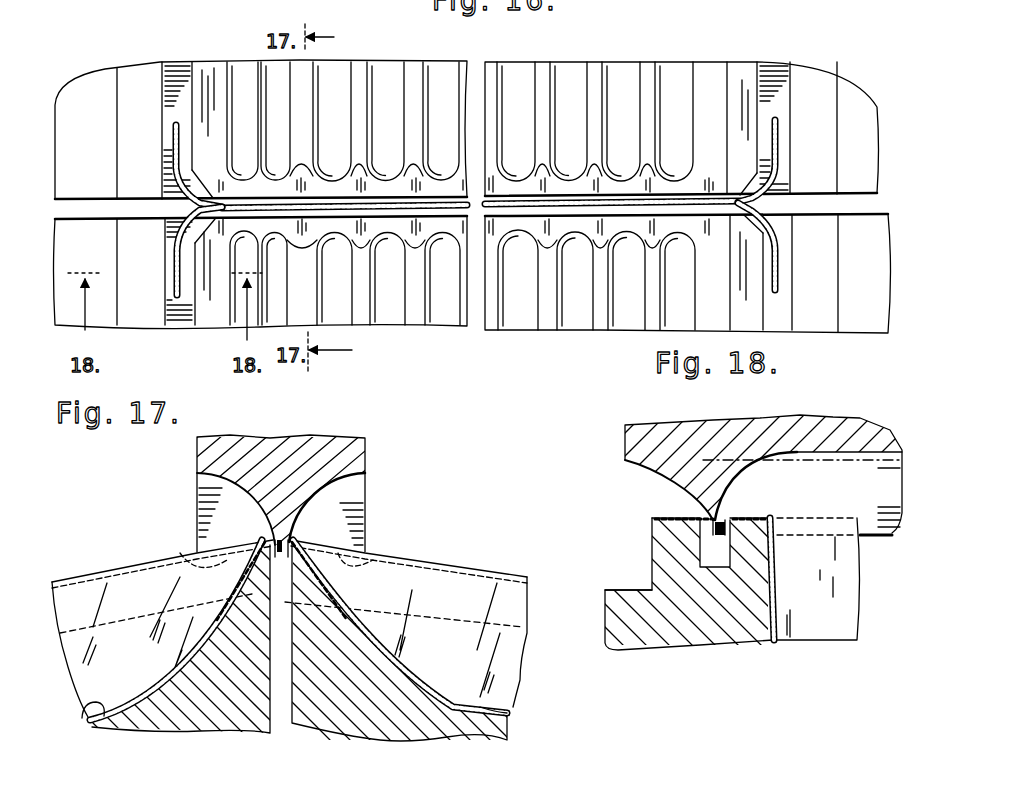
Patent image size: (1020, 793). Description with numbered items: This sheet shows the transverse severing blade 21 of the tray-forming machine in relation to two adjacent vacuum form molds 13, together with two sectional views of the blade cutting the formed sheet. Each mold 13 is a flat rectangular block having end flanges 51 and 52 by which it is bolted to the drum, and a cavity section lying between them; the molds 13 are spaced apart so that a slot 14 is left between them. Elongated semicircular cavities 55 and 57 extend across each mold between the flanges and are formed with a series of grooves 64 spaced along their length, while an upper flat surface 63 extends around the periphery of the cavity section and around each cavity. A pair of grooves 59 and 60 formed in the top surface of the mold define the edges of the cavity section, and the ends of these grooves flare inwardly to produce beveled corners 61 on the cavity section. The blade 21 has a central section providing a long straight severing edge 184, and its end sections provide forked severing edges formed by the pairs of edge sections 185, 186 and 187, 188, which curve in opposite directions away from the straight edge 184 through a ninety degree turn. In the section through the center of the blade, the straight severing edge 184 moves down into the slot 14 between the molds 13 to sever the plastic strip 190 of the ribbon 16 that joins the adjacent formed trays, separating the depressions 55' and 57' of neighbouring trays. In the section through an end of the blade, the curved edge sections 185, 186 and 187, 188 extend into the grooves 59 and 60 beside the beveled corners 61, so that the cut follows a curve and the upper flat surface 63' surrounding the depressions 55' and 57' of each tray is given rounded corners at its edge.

In FIG. 16, the vacuum form mold 13 is at (106, 64).
In FIG. 17, the vacuum form mold 13 is at (181, 743).
In FIG. 18, the vacuum form mold 13 is at (646, 655).
In FIG. 16, the slot 14 is at (138, 210).
In FIG. 17, the slot 14 is at (282, 611).
In FIG. 17, the ribbon 16 is at (84, 704).
In FIG. 18, the ribbon 16 is at (668, 515).
In FIG. 17, the heated blade 21 is at (356, 458).
In FIG. 18, the heated blade 21 is at (635, 441).
In FIG. 16, the end flange 51 is at (85, 96).
In FIG. 18, the end flange 51 is at (622, 590).
In FIG. 16, the end flange 52 is at (853, 92).
In FIG. 16, the elongated cavity 55 is at (341, 295).
In FIG. 17, the depression 55' is at (121, 607).
In FIG. 16, the elongated cavity 57 is at (341, 101).
In FIG. 17, the depression 57' is at (461, 617).
In FIG. 18, the depression 57' is at (818, 556).
In FIG. 16, the groove 59 is at (175, 70).
In FIG. 17, the groove 59 is at (121, 583).
In FIG. 18, the groove 59 is at (712, 553).
In FIG. 16, the groove 60 is at (771, 74).
In FIG. 16, the beveled corner 61 is at (208, 183).
In FIG. 16, the upper flat surface 63 is at (513, 208).
In FIG. 18, the upper flat surface 63' is at (750, 501).
In FIG. 16, the groove 64 is at (668, 78).
In FIG. 16, the straight severing edge 184 is at (553, 183).
In FIG. 17, the straight severing edge 184 is at (234, 597).
In FIG. 18, the straight severing edge 184 is at (880, 537).
In FIG. 16, the edge section 185 is at (175, 130).
In FIG. 17, the edge section 185 is at (377, 553).
In FIG. 16, the edge section 186 is at (176, 273).
In FIG. 17, the edge section 186 is at (183, 553).
In FIG. 18, the edge section 186 is at (710, 536).
In FIG. 16, the edge section 187 is at (777, 139).
In FIG. 16, the edge section 188 is at (778, 275).
In FIG. 17, the plastic strip 190 is at (291, 544).